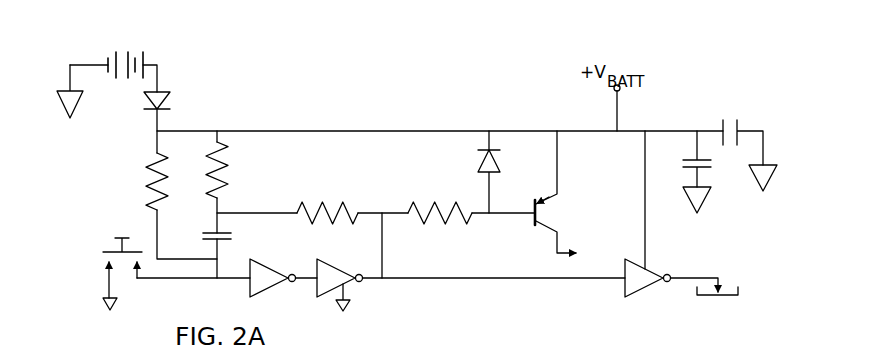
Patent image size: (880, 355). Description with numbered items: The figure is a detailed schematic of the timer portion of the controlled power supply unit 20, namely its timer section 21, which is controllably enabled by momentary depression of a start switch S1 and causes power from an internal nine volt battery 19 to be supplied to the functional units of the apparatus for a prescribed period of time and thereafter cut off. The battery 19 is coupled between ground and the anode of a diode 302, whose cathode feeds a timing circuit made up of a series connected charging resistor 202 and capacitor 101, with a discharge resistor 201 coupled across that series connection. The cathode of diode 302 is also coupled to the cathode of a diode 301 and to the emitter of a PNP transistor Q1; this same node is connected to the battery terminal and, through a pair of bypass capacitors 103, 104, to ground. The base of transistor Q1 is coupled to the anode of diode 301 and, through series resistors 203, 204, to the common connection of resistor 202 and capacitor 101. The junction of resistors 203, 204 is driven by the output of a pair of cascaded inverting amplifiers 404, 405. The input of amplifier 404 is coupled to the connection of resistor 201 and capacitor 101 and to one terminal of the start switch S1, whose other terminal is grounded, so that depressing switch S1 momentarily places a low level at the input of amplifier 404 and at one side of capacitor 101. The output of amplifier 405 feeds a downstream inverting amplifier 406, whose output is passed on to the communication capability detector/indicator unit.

The timer section 21 is at (440, 177).
The 9 volt battery 19 is at (122, 83).
The diode 302 is at (168, 97).
The discharge resistor 201 is at (145, 188).
The charging resistor 202 is at (222, 172).
The capacitor 101 is at (202, 234).
The resistor 203 is at (335, 201).
The resistor 204 is at (435, 226).
The diode 301 is at (477, 158).
The PNP transistor Q1 is at (550, 212).
The bypass capacitor 103 is at (684, 162).
The bypass capacitor 104 is at (728, 119).
The start switch S1 is at (105, 243).
The inverting amplifier 404 is at (272, 269).
The inverting amplifier 405 is at (342, 271).
The inverting amplifier 406 is at (625, 292).
The controlled power supply unit 20 is at (562, 286).